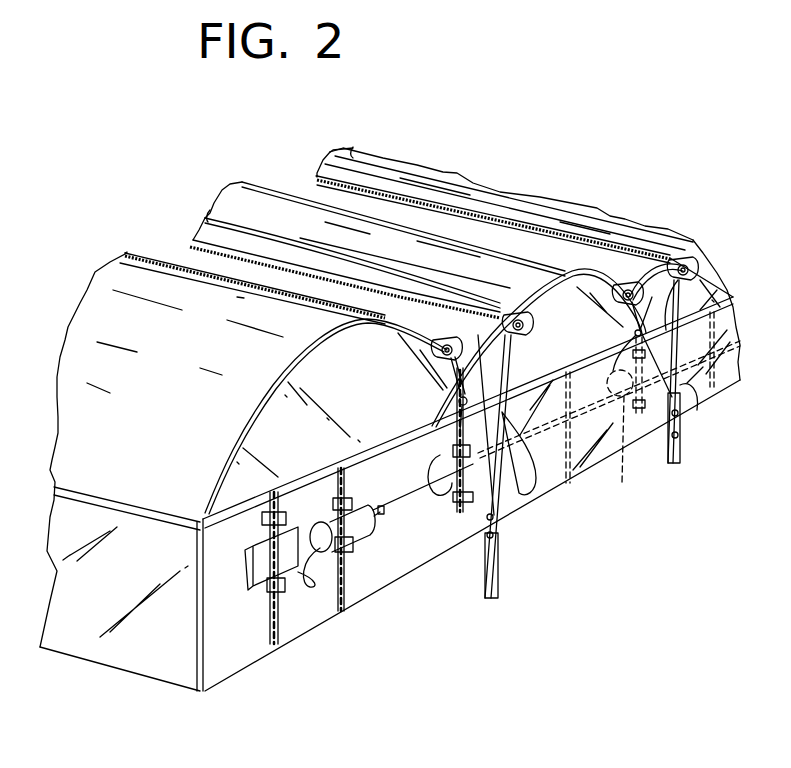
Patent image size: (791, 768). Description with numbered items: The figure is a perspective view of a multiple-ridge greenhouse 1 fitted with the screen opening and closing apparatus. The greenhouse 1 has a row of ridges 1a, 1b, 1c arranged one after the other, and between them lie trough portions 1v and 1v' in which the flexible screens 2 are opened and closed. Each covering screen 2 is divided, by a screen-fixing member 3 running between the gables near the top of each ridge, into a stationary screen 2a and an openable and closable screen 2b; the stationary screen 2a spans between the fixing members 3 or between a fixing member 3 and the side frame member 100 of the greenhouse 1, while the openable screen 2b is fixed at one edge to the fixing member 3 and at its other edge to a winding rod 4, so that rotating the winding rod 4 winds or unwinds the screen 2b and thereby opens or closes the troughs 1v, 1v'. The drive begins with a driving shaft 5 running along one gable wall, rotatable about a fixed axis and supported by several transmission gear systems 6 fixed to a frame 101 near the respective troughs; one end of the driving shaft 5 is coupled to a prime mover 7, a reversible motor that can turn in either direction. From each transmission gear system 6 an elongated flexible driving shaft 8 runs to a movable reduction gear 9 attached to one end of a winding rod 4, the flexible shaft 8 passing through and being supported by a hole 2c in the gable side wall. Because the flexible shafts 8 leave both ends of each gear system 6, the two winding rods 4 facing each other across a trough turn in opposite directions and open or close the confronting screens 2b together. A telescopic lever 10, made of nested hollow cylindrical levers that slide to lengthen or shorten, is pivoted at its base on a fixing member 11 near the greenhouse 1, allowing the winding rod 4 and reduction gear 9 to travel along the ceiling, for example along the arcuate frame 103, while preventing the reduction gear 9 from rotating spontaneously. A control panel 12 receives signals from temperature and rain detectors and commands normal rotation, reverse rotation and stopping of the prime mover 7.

The greenhouse 1 is at (222, 185).
The ridge 1a is at (183, 362).
The ridge 1b is at (375, 258).
The ridge 1c is at (493, 187).
The trough portion 1v is at (148, 221).
The trough portion 1v' is at (287, 151).
The flexible screen 2 is at (374, 140).
The stationary screen 2a is at (263, 198).
The openable and closable screen 2b is at (385, 346).
The hole 2c is at (517, 464).
The screen-fixing member 3 is at (353, 148).
The winding rod 4 is at (594, 275).
The driving shaft 5 is at (423, 500).
The transmission gear system 6 is at (632, 417).
The prime mover 7 is at (373, 536).
The flexible driving shaft 8 is at (530, 325).
The reduction gear 9 is at (505, 312).
The telescopic lever 10 is at (513, 372).
The fixing member 11 is at (683, 458).
The control panel 12 is at (248, 584).
The side frame member 100 is at (148, 517).
The frame 101 is at (624, 448).
The arcuate frame 103 is at (270, 388).